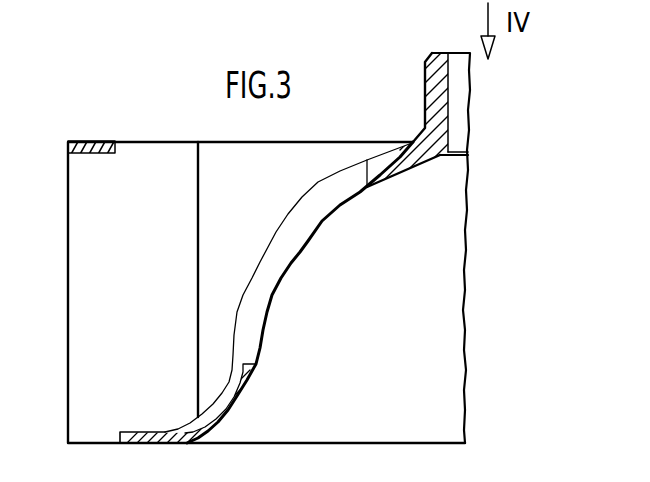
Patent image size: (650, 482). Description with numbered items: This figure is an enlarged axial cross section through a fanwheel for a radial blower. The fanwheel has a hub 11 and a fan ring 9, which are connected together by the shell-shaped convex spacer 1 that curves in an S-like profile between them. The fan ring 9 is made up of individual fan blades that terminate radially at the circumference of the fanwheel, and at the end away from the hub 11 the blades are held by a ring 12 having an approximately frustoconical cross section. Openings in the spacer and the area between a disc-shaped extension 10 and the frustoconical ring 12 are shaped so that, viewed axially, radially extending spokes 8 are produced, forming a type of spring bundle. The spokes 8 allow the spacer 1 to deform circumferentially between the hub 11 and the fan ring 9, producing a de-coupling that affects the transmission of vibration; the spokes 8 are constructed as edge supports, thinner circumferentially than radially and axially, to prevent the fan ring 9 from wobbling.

The shell-shaped convex spacer 1 is at (303, 271).
The spokes 8 is at (282, 232).
The fan ring 9 is at (82, 258).
The disc-shaped extension 10 is at (406, 170).
The hub 11 is at (449, 107).
The frustoconical ring 12 is at (186, 445).